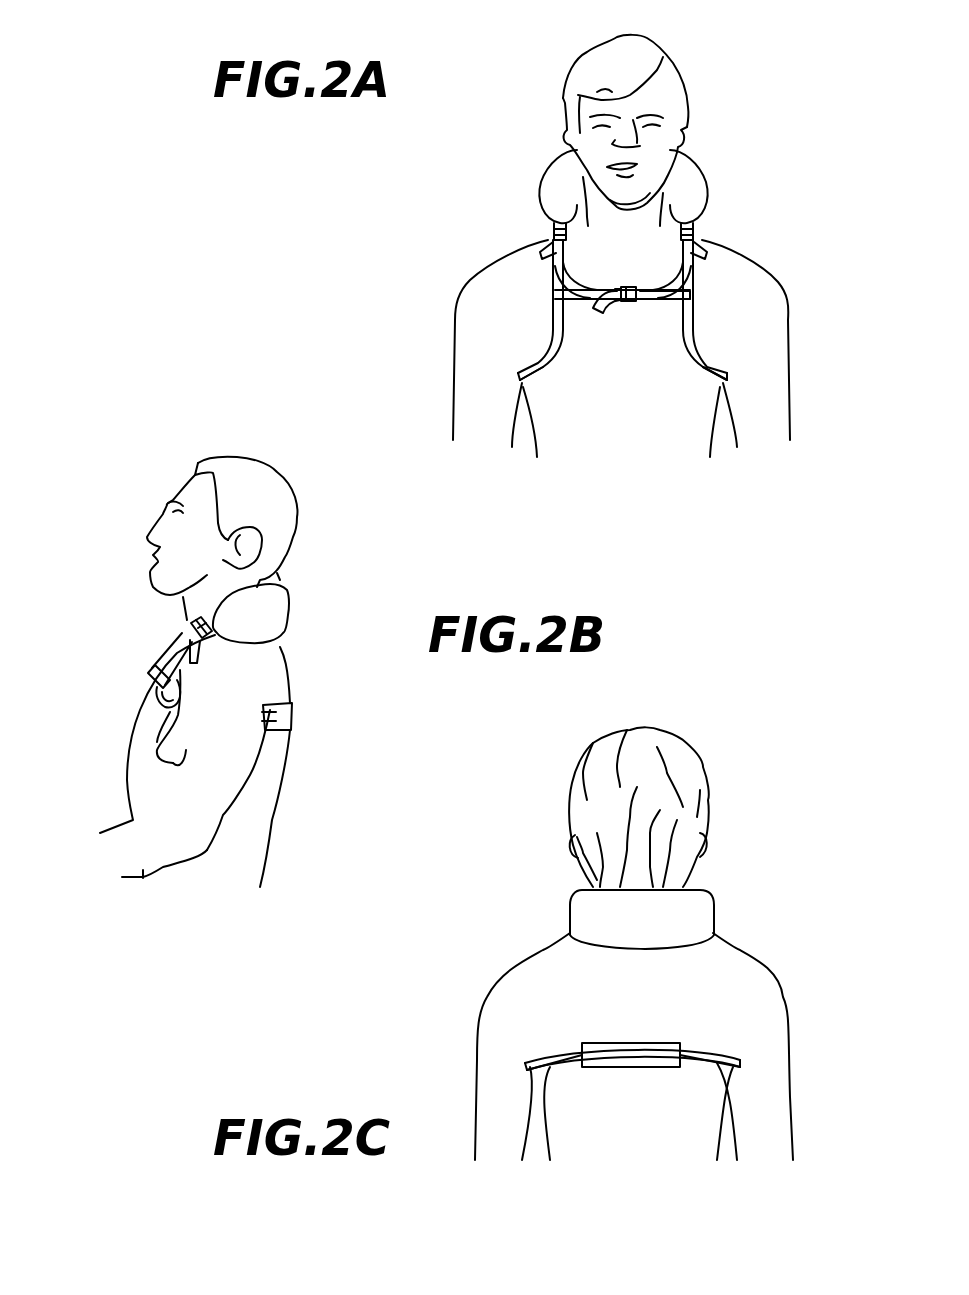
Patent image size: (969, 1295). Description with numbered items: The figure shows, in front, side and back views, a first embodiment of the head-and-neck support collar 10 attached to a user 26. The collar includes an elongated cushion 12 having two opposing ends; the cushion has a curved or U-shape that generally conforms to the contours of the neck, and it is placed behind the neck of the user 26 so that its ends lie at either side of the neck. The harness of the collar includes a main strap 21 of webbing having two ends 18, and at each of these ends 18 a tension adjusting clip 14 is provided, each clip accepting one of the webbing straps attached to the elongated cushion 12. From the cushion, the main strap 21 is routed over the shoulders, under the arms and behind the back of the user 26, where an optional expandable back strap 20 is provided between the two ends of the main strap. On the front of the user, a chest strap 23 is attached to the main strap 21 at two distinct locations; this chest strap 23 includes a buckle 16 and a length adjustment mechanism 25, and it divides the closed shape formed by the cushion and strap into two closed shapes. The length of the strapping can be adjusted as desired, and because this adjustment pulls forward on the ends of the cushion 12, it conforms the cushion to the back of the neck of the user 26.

In FIG. 2A, the head-and-neck support collar 10 is at (750, 88).
In FIG. 2B, the head-and-neck support collar 10 is at (140, 447).
In FIG. 2C, the head-and-neck support collar 10 is at (755, 849).
In FIG. 2A, the elongated cushion 12 is at (700, 186).
In FIG. 2B, the elongated cushion 12 is at (287, 612).
In FIG. 2C, the elongated cushion 12 is at (700, 910).
In FIG. 2A, the tension adjusting clips 14 is at (549, 234).
In FIG. 2B, the tension adjusting clips 14 is at (187, 620).
In FIG. 2A, the buckle 16 is at (624, 303).
In FIG. 2A, the ends 18 is at (692, 274).
In FIG. 2B, the ends 18 is at (170, 660).
In FIG. 2B, the expandable back strap 20 is at (290, 732).
In FIG. 2C, the expandable back strap 20 is at (642, 1066).
In FIG. 2A, the main strap 21 is at (540, 363).
In FIG. 2B, the main strap 21 is at (250, 748).
In FIG. 2C, the main strap 21 is at (547, 1058).
In FIG. 2A, the chest strap 23 is at (647, 300).
In FIG. 2A, the length adjustment mechanism 25 is at (606, 328).
In FIG. 2A, the user 26 is at (566, 90).
In FIG. 2B, the user 26 is at (283, 493).
In FIG. 2C, the user 26 is at (580, 808).